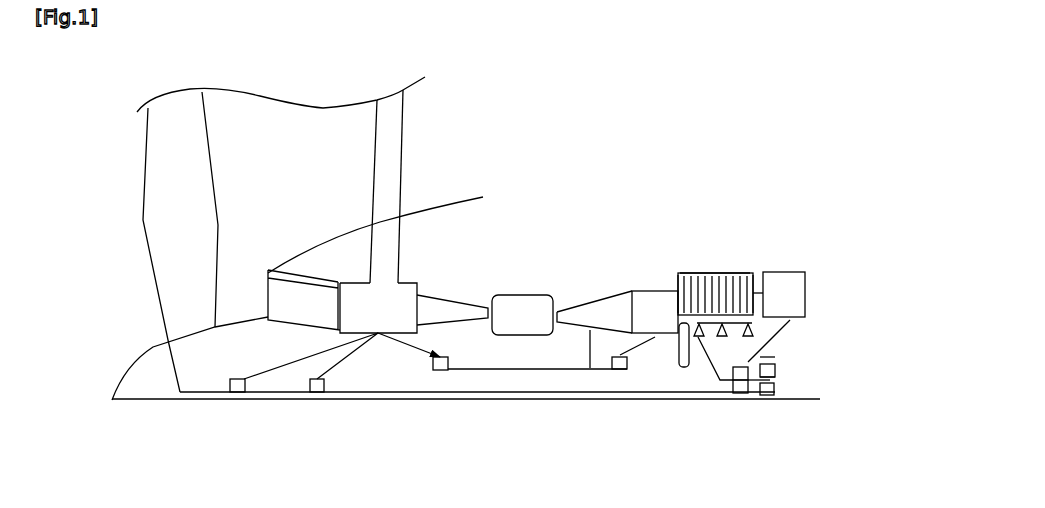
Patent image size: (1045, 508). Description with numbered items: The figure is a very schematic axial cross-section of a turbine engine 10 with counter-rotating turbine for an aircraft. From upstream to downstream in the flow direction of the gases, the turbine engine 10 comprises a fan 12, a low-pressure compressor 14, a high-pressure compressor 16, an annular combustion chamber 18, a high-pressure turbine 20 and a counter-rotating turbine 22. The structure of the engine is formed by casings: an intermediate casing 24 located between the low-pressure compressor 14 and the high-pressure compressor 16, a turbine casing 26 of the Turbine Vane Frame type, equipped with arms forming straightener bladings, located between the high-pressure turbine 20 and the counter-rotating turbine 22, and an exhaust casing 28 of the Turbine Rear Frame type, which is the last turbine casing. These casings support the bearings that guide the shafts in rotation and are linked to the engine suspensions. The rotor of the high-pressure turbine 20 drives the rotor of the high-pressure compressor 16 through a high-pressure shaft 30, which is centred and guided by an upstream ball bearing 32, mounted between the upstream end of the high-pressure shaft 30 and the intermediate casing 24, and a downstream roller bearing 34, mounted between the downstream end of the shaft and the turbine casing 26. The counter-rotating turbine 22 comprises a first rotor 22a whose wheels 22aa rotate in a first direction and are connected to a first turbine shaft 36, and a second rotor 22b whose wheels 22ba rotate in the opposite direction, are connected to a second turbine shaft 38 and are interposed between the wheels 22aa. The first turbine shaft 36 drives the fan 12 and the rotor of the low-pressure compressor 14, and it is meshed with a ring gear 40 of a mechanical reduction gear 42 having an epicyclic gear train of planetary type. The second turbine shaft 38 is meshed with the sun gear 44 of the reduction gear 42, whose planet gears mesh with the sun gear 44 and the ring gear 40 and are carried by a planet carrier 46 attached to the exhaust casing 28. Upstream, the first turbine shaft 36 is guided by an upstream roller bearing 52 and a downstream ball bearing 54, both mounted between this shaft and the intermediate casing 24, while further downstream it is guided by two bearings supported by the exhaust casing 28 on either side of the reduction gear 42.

The turbine engine 10 is at (790, 102).
The fan 12 is at (104, 243).
The low-pressure compressor 14 is at (304, 277).
The high-pressure compressor 16 is at (463, 369).
The annular combustion chamber 18 is at (520, 338).
The high-pressure turbine 20 is at (580, 297).
The counter-rotating turbine 22 is at (716, 266).
The first rotor 22a is at (675, 281).
The wheels of the first rotor 22aa is at (711, 266).
The second rotor 22b is at (764, 295).
The wheels of the second rotor 22ba is at (749, 272).
The intermediate casing 24 is at (380, 334).
The turbine casing 26 is at (656, 337).
The exhaust casing 28 is at (794, 321).
The high-pressure shaft 30 is at (570, 370).
The upstream ball bearing 32 is at (442, 371).
The downstream roller bearing 34 is at (620, 355).
The first turbine shaft 36 is at (700, 393).
The second turbine shaft 38 is at (725, 393).
The ring gear 40 is at (773, 364).
The mechanical reduction gear 42 is at (775, 392).
The sun gear 44 is at (752, 393).
The planet carrier 46 is at (767, 355).
The upstream roller bearing 52 is at (238, 393).
The downstream ball bearing 54 is at (318, 393).